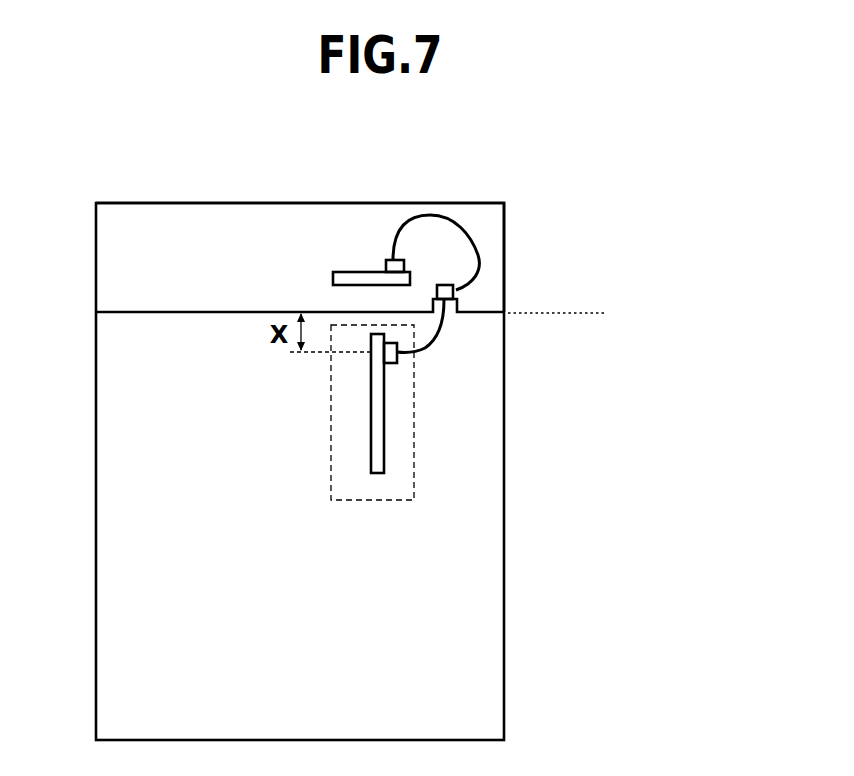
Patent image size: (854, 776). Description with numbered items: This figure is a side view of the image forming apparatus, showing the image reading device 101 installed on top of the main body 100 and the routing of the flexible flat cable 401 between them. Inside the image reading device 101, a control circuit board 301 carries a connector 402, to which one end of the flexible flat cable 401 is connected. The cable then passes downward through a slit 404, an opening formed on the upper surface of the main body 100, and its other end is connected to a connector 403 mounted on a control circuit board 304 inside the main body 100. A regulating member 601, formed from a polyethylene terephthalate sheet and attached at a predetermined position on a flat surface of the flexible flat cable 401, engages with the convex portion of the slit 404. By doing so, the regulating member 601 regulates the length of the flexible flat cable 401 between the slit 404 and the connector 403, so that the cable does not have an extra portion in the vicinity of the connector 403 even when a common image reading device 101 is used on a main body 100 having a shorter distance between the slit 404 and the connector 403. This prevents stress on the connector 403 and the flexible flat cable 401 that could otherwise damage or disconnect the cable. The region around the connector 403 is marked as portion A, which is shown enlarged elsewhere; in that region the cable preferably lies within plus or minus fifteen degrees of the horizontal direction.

The main body 100 is at (618, 315).
The image reading device 101 is at (618, 205).
The control circuit board 301 is at (342, 272).
The connector 402 is at (390, 260).
The flexible flat cable 401 is at (469, 228).
The regulating member 601 is at (453, 292).
The slit 404 is at (455, 300).
The connector 403 is at (385, 363).
The control circuit board 304 is at (371, 463).
The portion A is at (380, 502).